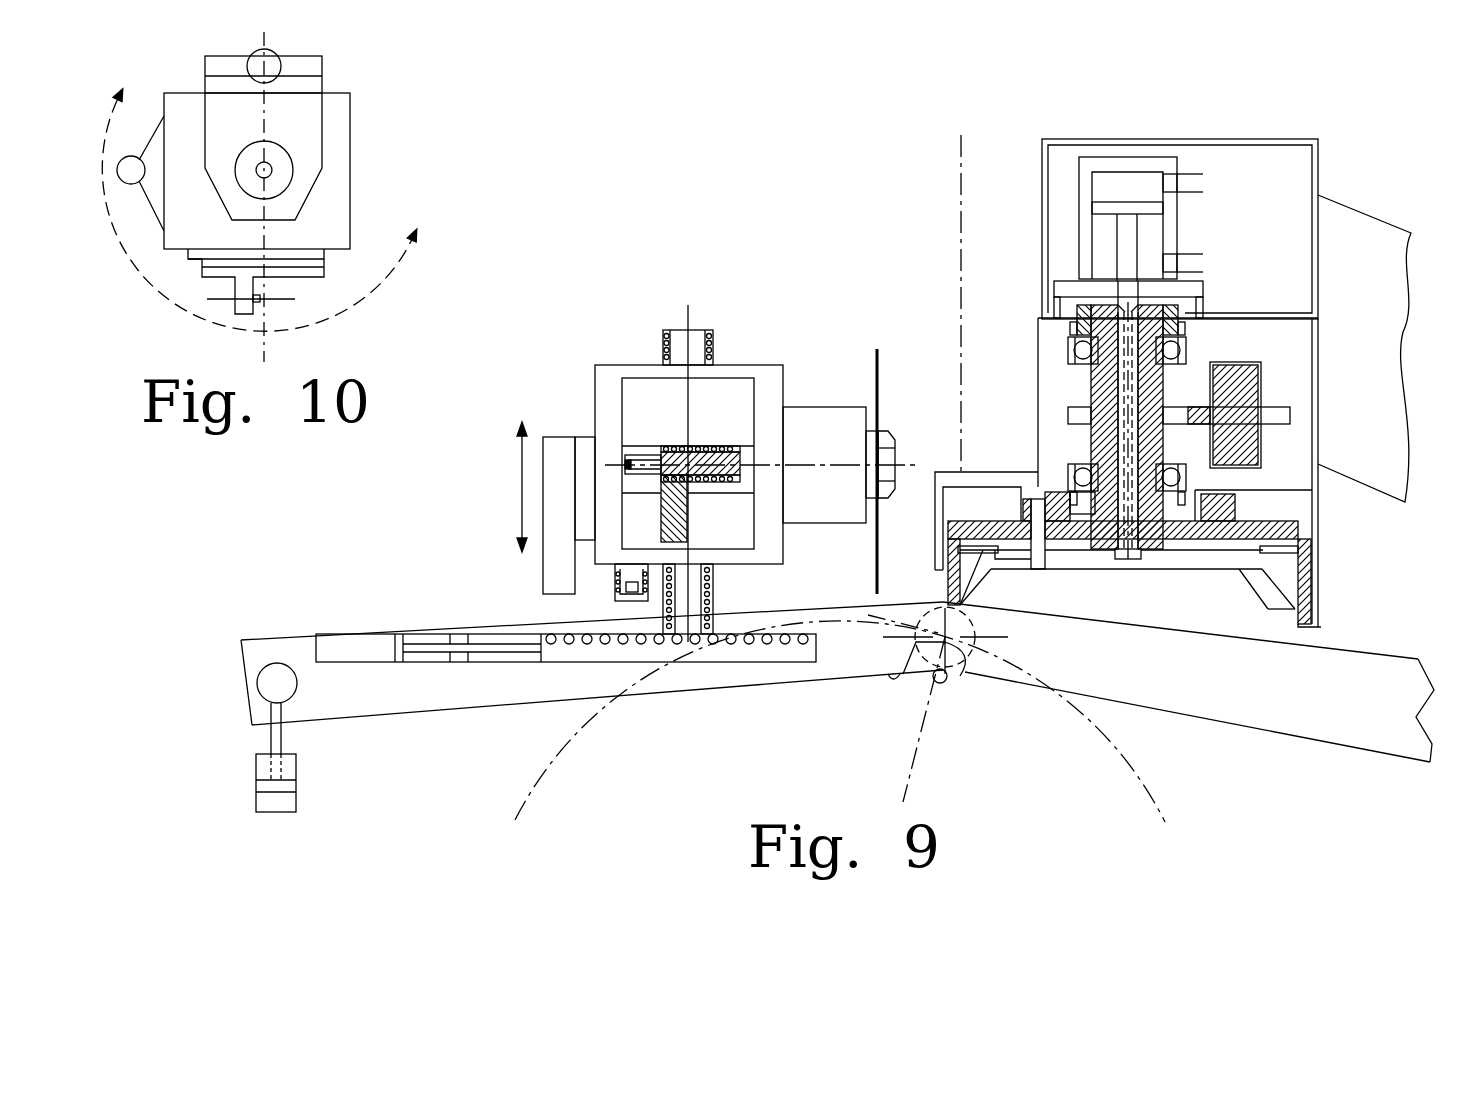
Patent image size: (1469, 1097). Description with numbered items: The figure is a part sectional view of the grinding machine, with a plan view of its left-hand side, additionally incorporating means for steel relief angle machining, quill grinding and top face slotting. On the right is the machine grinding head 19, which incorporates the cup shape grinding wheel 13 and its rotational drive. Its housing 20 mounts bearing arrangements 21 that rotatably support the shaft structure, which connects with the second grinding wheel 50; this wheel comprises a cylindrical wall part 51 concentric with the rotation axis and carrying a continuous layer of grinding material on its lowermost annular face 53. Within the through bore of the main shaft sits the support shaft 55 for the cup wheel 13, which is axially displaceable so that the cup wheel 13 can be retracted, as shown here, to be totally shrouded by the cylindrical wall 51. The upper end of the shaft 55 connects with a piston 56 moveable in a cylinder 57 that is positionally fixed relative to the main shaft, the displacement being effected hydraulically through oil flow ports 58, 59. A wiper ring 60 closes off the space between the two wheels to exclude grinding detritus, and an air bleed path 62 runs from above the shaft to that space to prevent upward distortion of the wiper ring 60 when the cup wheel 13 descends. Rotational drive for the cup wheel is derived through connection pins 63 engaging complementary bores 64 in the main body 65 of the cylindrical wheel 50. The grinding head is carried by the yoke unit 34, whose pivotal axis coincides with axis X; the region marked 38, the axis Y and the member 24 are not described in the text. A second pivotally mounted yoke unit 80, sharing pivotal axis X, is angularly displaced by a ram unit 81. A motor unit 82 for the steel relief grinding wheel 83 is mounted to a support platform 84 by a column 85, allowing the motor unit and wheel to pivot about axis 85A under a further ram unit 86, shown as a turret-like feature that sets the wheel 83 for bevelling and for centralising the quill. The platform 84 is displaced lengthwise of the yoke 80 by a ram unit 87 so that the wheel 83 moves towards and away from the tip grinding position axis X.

In FIG. 10, the ram unit 86 is at (336, 208).
In FIG. 9, the second pivotally mounted yoke unit 80 is at (383, 698).
In FIG. 9, the ram unit 81 is at (290, 800).
In FIG. 9, the support platform 84 is at (728, 662).
In FIG. 9, the ram unit 87 is at (492, 636).
In FIG. 9, the column 85 is at (716, 600).
In FIG. 9, the pivot axis 85A is at (688, 313).
In FIG. 9, the motor unit 82 is at (838, 418).
In FIG. 9, the steel relief grinding wheel 83 is at (877, 365).
In FIG. 9, the yoke unit 34 is at (1235, 700).
In FIG. 9, the arm portion 38 is at (1200, 677).
In FIG. 9, the pivotal axis X is at (975, 668).
In FIG. 9, the axis Y is at (963, 160).
In FIG. 9, the machine grinding head 19 is at (1044, 150).
In FIG. 9, the housing 20 is at (1322, 160).
In FIG. 9, the support arm 24 is at (1383, 362).
In FIG. 9, the piston 56 is at (1128, 205).
In FIG. 9, the cylinder 57 is at (1087, 208).
In FIG. 9, the oil flow port 58 is at (1190, 178).
In FIG. 9, the oil flow port 59 is at (1190, 262).
In FIG. 9, the air bleed path 62 is at (1112, 290).
In FIG. 9, the support shaft 55 is at (1140, 388).
In FIG. 9, the bearing arrangements 21 is at (1176, 348).
In FIG. 9, the second grinding wheel 50 is at (1300, 516).
In FIG. 9, the cylindrical wall part 51 is at (1318, 585).
In FIG. 9, the lowermost annular face 53 is at (1320, 628).
In FIG. 9, the wiper ring 60 is at (1302, 548).
In FIG. 9, the connection pins 63 is at (1038, 512).
In FIG. 9, the complementary bores 64 is at (1052, 500).
In FIG. 9, the main body 65 is at (1005, 514).
In FIG. 9, the cup shape grinding wheel 13 is at (1207, 568).